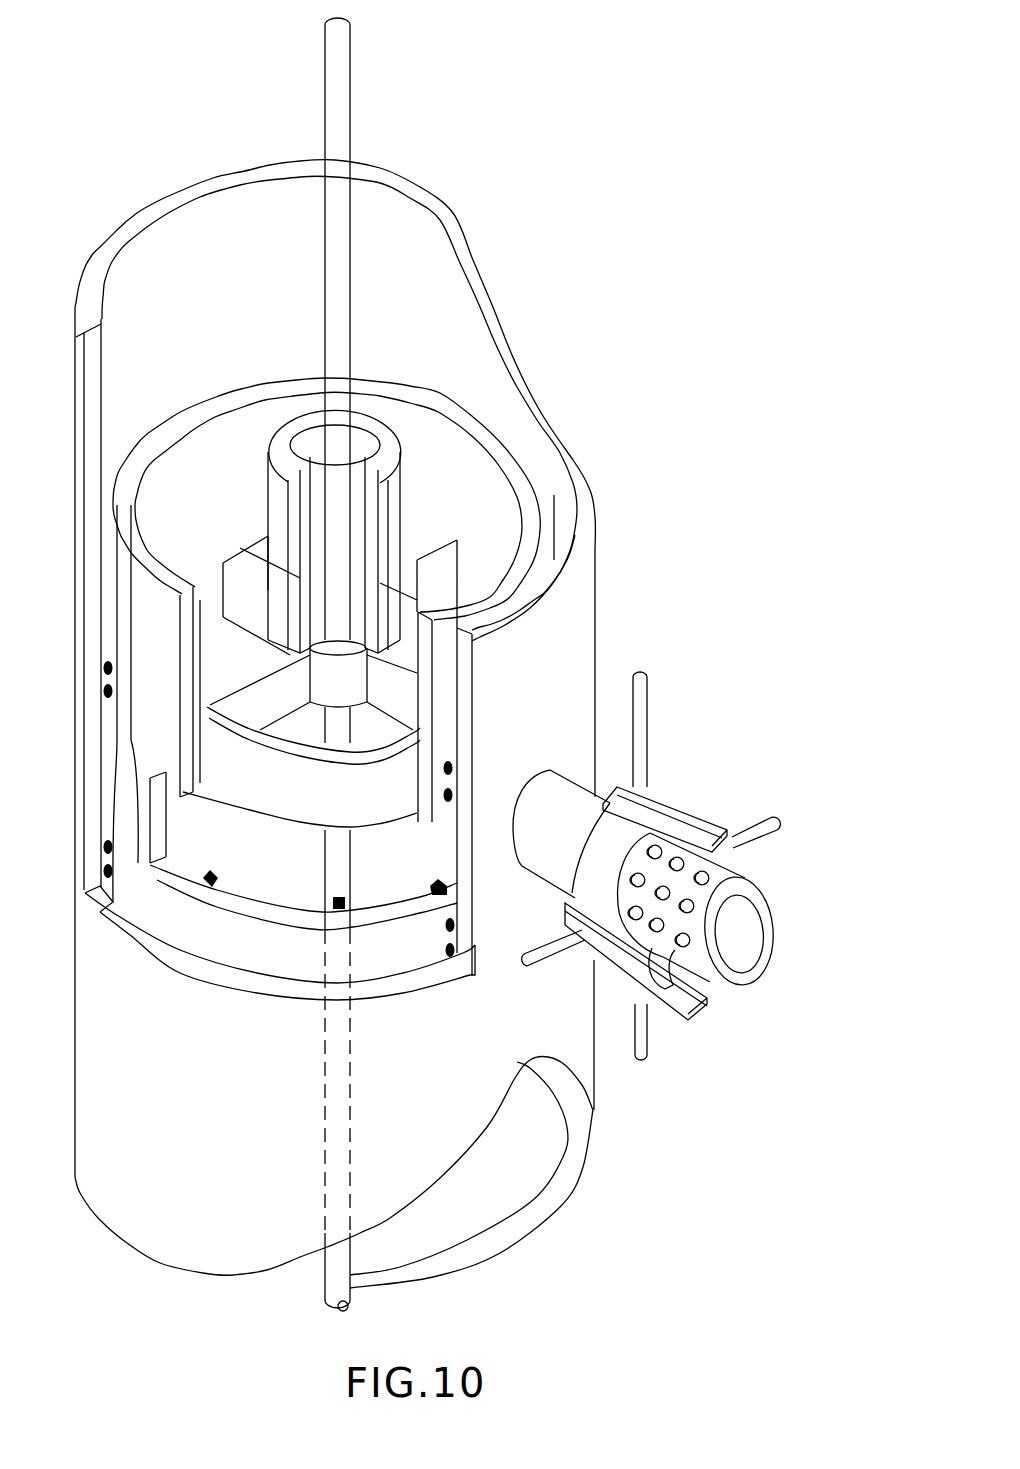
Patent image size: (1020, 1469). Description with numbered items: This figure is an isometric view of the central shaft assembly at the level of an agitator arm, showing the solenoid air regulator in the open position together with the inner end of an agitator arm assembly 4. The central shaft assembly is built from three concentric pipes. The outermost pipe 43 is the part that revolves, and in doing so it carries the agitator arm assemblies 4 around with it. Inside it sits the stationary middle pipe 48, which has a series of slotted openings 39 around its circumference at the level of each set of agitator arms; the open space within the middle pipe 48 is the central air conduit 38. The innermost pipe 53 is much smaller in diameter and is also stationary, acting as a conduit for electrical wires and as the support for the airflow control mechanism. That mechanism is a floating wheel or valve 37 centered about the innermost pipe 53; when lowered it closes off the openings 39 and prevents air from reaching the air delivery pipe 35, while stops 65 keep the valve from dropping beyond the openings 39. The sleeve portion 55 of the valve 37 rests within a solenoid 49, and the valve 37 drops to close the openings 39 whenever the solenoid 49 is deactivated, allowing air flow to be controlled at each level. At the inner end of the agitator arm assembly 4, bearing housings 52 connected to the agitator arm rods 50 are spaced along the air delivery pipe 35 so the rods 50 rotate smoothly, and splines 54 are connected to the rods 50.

The outermost pipe 43 is at (455, 216).
The middle pipe 48 is at (409, 385).
The central air conduit 38 is at (439, 435).
The solenoid 49 is at (373, 490).
The sleeve portion 55 is at (358, 695).
The floating wheel or valve 37 is at (350, 804).
The slotted openings 39 is at (292, 856).
The stops 65 is at (343, 892).
The innermost pipe 53 is at (353, 1303).
The bearing housings 52 is at (600, 817).
The air delivery pipe 35 is at (740, 945).
The agitator arm rods 50 is at (660, 796).
The agitator arm assembly 4 is at (613, 949).
The splines 54 is at (640, 1059).